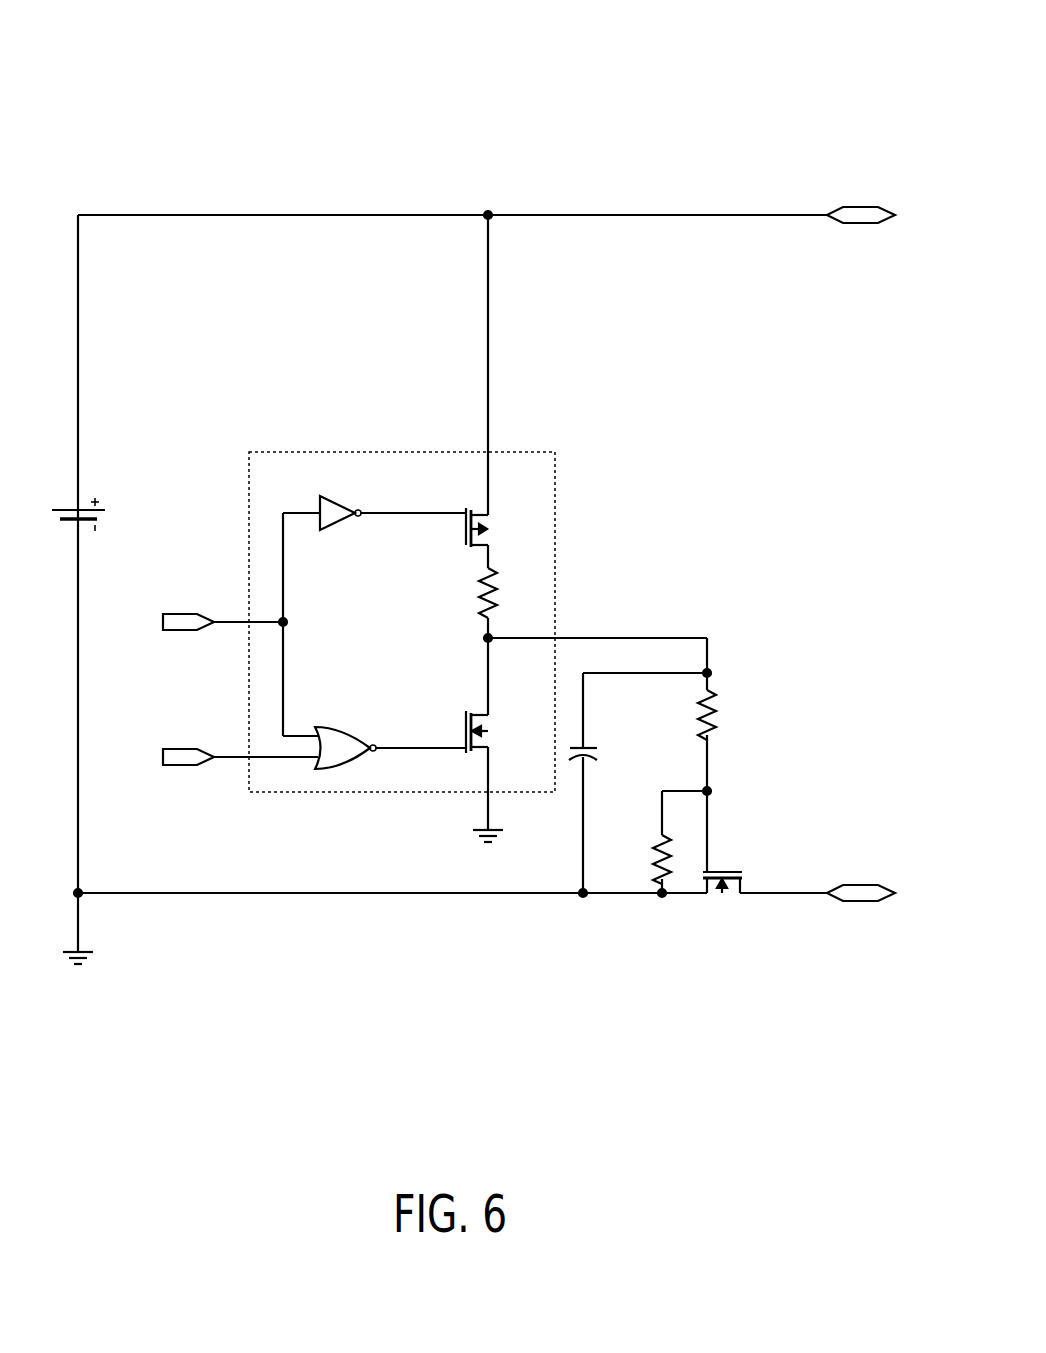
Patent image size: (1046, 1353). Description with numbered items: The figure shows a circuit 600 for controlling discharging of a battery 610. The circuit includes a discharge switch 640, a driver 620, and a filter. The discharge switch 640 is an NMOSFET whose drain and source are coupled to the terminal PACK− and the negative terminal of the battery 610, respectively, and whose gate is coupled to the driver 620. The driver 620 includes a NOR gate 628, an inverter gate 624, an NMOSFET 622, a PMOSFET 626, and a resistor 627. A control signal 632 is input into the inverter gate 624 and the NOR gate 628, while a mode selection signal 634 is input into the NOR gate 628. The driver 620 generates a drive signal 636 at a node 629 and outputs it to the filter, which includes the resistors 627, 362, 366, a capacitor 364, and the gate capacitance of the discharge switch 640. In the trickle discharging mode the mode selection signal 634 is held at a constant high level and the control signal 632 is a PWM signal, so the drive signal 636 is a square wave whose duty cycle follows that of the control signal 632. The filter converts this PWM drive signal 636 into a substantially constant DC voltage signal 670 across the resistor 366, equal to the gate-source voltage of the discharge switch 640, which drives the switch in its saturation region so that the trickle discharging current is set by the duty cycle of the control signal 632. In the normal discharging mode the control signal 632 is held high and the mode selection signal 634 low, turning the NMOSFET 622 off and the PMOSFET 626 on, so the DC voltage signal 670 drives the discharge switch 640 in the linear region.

The circuit 600 is at (166, 126).
The battery 610 is at (70, 507).
The driver 620 is at (337, 452).
The NMOSFET 622 is at (496, 714).
The inverter gate 624 is at (343, 503).
The PMOSFET 626 is at (496, 516).
The resistor 627 is at (482, 595).
The NOR gate 628 is at (345, 727).
The node 629 is at (493, 650).
The control signal 632 is at (180, 632).
The mode selection signal 634 is at (180, 748).
The drive signal 636 is at (575, 638).
The resistor 362 is at (716, 712).
The capacitor 364 is at (592, 745).
The resistor 366 is at (655, 855).
The DC voltage signal 670 is at (660, 797).
The discharge switch 640 is at (725, 836).